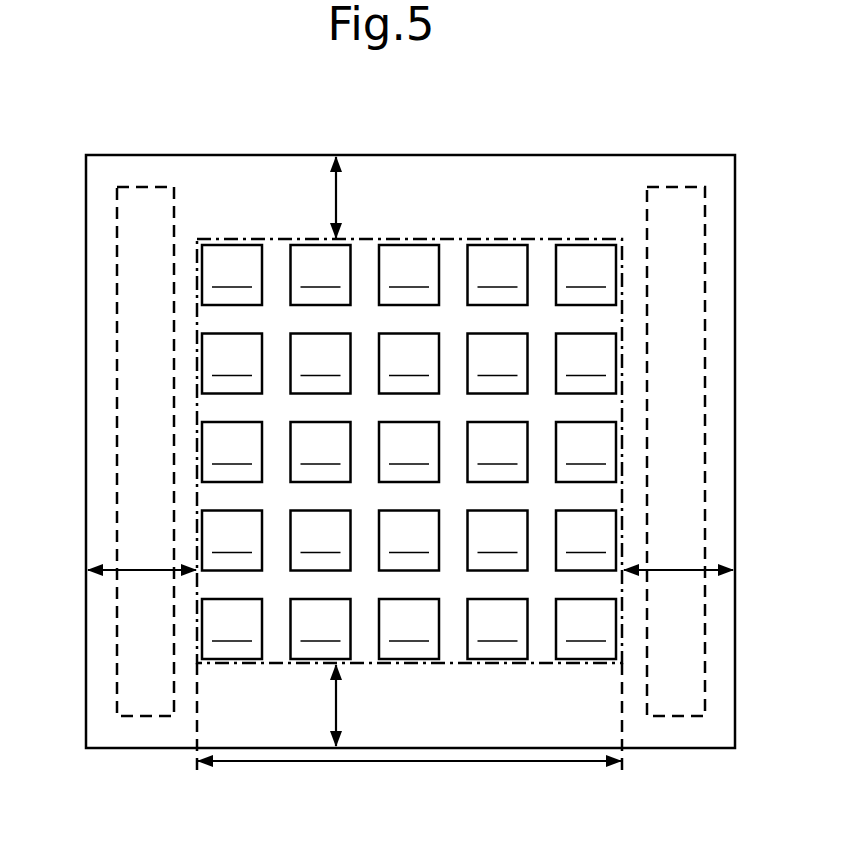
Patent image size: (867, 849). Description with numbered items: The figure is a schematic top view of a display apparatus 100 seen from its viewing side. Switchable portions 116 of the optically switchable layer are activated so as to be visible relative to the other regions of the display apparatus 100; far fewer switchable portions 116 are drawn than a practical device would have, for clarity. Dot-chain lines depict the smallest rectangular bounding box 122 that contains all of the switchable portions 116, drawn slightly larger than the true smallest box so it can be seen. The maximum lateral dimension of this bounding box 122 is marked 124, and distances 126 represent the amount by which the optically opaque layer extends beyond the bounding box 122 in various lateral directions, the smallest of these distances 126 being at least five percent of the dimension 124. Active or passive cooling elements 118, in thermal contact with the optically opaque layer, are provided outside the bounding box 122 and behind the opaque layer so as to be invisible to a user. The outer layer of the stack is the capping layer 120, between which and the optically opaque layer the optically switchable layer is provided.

The display apparatus 100 is at (211, 138).
The switchable portions 116 is at (409, 452).
The active or passive cooling elements 118 is at (117, 420).
The capping layer 120 is at (545, 186).
The smallest rectangular bounding box 122 is at (450, 239).
The maximum lateral dimension of the smallest rectangular bounding box 124 is at (404, 763).
The distances 126 is at (335, 201).